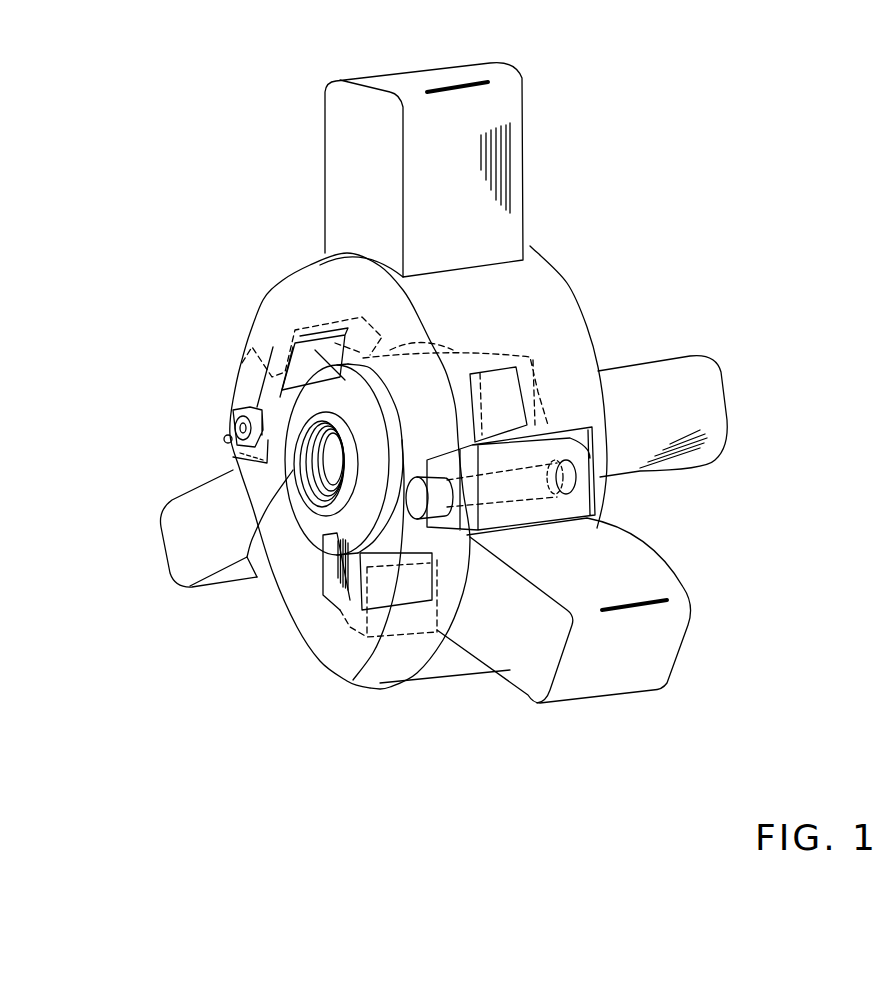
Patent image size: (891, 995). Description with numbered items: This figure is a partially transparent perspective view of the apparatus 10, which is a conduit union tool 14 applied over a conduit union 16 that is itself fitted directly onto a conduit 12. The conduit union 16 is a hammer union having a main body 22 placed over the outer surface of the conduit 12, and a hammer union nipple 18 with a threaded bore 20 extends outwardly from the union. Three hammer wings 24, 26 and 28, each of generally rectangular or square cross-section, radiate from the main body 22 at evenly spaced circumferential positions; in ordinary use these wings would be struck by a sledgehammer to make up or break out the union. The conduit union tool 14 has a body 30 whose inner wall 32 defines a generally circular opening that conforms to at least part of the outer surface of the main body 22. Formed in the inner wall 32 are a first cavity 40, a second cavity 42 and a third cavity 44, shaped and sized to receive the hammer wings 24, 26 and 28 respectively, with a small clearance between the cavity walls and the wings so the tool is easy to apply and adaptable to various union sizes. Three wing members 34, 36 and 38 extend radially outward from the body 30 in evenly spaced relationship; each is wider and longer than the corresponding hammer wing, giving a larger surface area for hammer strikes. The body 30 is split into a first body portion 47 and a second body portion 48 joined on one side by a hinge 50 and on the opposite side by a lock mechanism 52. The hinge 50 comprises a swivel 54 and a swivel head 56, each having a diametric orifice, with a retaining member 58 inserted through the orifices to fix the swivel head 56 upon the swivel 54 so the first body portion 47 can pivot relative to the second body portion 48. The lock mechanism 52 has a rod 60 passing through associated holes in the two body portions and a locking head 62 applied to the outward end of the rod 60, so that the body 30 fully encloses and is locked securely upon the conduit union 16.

The apparatus 10 is at (140, 277).
The conduit 12 is at (703, 406).
The conduit union tool 14 is at (557, 316).
The conduit union 16 is at (410, 410).
The hammer union nipple 18 is at (320, 472).
The threaded bore 20 is at (247, 570).
The main body 22 is at (390, 607).
The hammer wing 24 is at (302, 365).
The hammer wing 26 is at (500, 405).
The hammer wing 28 is at (380, 687).
The body 30 is at (306, 642).
The inner wall 32 is at (333, 507).
The wing member 34 is at (510, 95).
The wing member 36 is at (665, 638).
The wing member 38 is at (183, 548).
The first cavity 40 is at (355, 365).
The second cavity 42 is at (537, 414).
The third cavity 44 is at (407, 620).
The first body portion 47 is at (525, 276).
The second body portion 48 is at (330, 655).
The hinge 50 is at (250, 405).
The lock mechanism 52 is at (583, 465).
The swivel 54 is at (243, 420).
The swivel head 56 is at (233, 460).
The retaining member 58 is at (224, 438).
The rod 60 is at (578, 490).
The locking head 62 is at (537, 500).